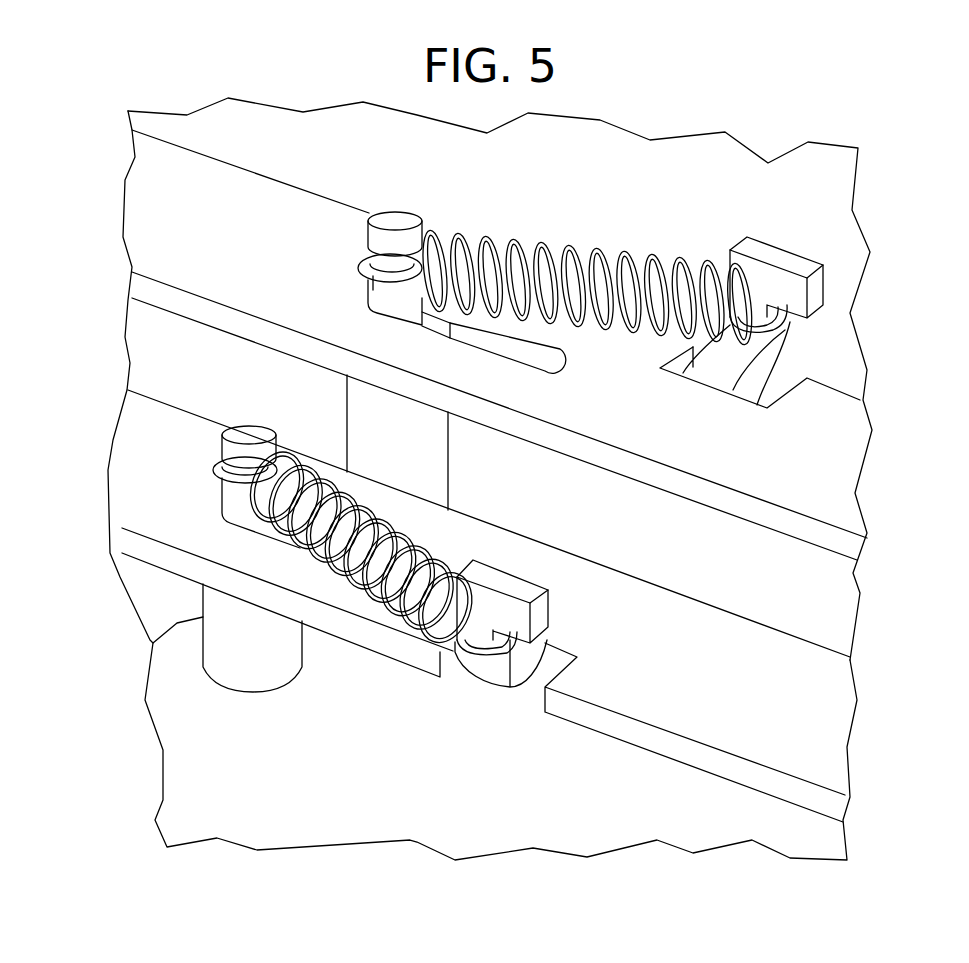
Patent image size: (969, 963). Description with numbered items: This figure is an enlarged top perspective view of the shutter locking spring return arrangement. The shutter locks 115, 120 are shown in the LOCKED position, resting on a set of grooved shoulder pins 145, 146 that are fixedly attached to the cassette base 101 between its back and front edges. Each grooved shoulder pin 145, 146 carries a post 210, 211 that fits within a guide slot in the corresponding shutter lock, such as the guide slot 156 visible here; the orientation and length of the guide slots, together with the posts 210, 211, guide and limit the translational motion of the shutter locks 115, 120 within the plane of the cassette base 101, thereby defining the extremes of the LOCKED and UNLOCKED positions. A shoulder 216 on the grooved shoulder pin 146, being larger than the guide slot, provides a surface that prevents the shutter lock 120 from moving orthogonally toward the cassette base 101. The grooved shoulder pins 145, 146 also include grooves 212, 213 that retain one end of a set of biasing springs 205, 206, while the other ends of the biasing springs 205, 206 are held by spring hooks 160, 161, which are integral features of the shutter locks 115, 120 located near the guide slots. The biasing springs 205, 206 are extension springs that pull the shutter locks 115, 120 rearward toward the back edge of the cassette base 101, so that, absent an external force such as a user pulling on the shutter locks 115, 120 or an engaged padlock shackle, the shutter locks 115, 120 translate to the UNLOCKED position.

The cassette base 101 is at (218, 767).
The shutter lock 115 is at (660, 740).
The shutter lock 120 is at (833, 460).
The grooved shoulder pin 145 is at (153, 643).
The grooved shoulder pin 146 is at (347, 400).
The guide slot 156 is at (548, 373).
The spring hook 160 is at (512, 688).
The spring hook 161 is at (787, 340).
The biasing spring 205 is at (318, 573).
The biasing spring 206 is at (602, 247).
The post 210 is at (243, 433).
The post 211 is at (398, 223).
The groove 212 is at (215, 457).
The groove 213 is at (362, 258).
The shoulder 216 is at (463, 330).